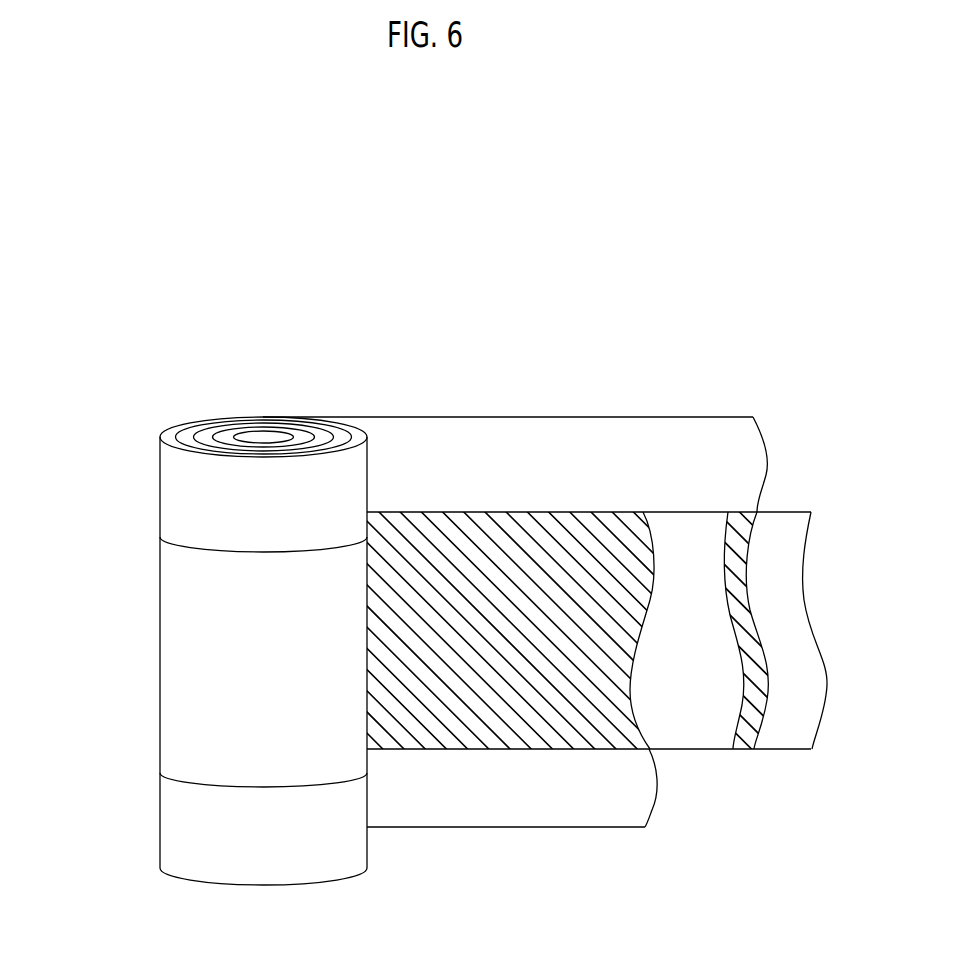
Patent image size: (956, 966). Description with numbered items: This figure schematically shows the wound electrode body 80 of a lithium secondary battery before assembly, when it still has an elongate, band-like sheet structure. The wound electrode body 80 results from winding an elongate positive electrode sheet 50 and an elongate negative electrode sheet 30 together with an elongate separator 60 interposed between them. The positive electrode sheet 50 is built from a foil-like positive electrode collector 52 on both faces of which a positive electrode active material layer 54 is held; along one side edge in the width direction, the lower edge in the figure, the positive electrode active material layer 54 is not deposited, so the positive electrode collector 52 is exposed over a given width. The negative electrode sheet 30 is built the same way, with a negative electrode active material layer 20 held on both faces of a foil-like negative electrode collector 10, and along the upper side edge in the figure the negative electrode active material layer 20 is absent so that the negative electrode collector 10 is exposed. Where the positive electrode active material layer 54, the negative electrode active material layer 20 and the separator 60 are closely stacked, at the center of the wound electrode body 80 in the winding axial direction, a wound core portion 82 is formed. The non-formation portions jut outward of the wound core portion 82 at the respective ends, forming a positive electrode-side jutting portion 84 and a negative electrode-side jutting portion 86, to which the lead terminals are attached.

The negative electrode collector 10 is at (537, 621).
The negative electrode active material layer 20 is at (742, 517).
The negative electrode sheet 30 is at (473, 415).
The positive electrode sheet 50 is at (508, 724).
The positive electrode collector 52 is at (485, 808).
The positive electrode active material layer 54 is at (600, 750).
The separator 60 is at (680, 723).
The wound electrode body 80 is at (212, 589).
The wound core portion 82 is at (175, 670).
The positive electrode-side jutting portion 84 is at (175, 822).
The negative electrode-side jutting portion 86 is at (175, 513).